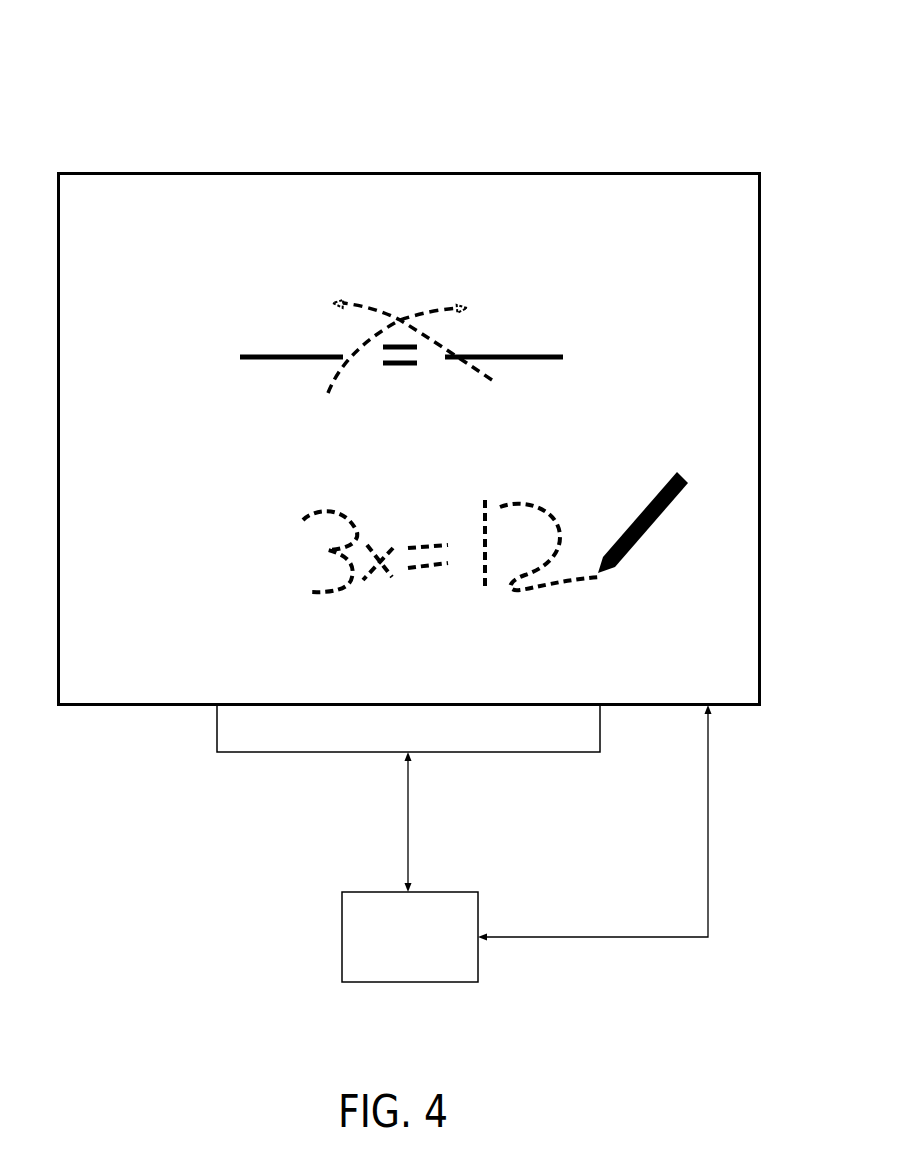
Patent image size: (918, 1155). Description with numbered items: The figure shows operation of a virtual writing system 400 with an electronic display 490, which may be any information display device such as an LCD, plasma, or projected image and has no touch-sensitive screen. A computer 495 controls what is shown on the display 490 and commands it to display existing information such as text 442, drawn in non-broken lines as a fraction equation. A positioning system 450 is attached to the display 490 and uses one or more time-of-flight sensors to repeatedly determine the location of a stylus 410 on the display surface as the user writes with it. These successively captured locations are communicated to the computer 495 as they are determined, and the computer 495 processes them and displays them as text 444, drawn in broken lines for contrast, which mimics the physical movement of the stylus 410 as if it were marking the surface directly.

The virtual writing system 400 is at (722, 44).
The stylus 410 is at (660, 534).
The text 442 is at (364, 355).
The text 444 is at (451, 423).
The positioning system 450 is at (408, 728).
The electronic display 490 is at (409, 481).
The computer 495 is at (527, 843).